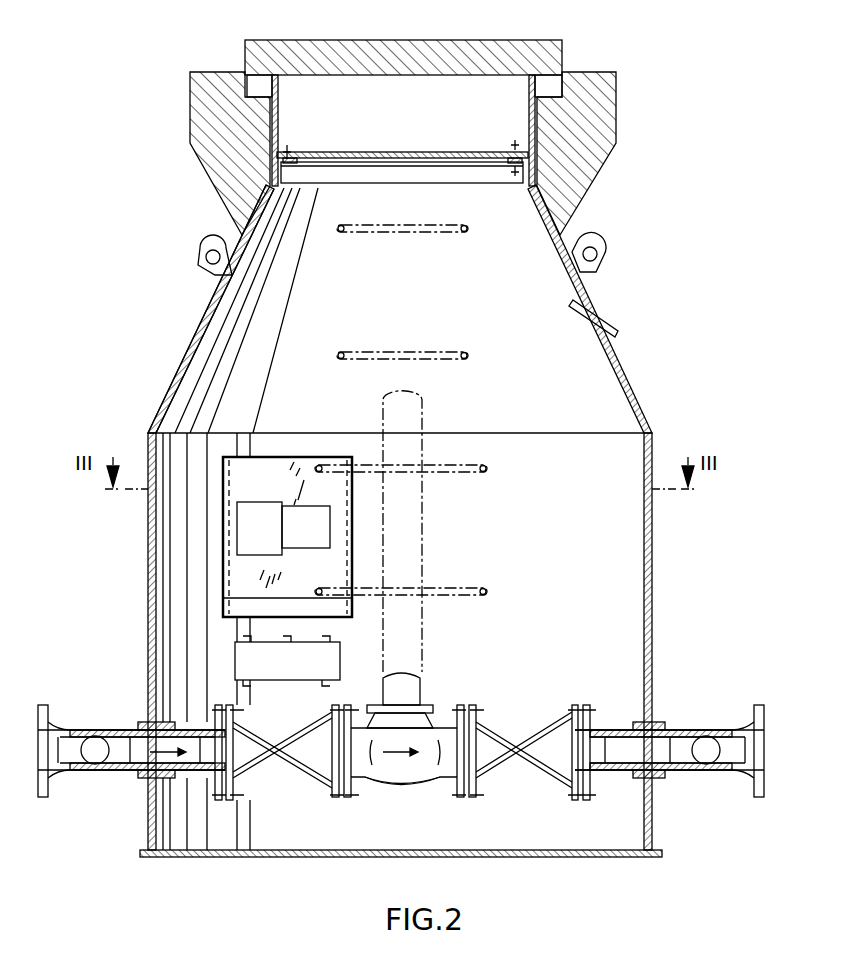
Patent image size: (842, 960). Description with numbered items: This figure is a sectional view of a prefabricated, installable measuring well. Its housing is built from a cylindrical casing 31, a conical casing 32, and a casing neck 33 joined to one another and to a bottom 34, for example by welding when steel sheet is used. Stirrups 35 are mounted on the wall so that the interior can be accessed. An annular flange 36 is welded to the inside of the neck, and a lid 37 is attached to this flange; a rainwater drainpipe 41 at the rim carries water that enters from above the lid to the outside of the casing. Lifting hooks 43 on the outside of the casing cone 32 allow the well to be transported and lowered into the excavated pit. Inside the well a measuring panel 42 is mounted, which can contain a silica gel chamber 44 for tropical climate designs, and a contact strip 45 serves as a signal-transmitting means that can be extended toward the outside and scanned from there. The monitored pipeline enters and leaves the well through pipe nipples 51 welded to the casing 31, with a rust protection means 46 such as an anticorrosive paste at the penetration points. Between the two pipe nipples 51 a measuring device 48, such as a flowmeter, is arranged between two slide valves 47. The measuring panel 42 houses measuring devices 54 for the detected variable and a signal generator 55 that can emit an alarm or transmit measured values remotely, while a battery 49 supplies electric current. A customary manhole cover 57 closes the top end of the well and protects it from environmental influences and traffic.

The cylindrical casing 31 is at (654, 656).
The conical casing 32 is at (642, 398).
The casing neck 33 is at (529, 120).
The bottom 34 is at (488, 850).
The stirrups 35 is at (437, 352).
The annular flange 36 is at (295, 160).
The lid 37 is at (365, 152).
The rainwater drainpipe 41 is at (578, 310).
The measuring panel 42 is at (342, 532).
The lifting hooks 43 is at (204, 262).
The silica gel chamber 44 is at (288, 608).
The contact strip 45 is at (190, 345).
The rust protection means 46 is at (146, 720).
The slide valves 47 is at (292, 770).
The measuring device 48 is at (410, 690).
The battery 49 is at (250, 660).
The pipe nipples 51 is at (140, 765).
The measuring devices 54 is at (318, 541).
The signal generator 55 is at (268, 541).
The manhole cover 57 is at (470, 55).